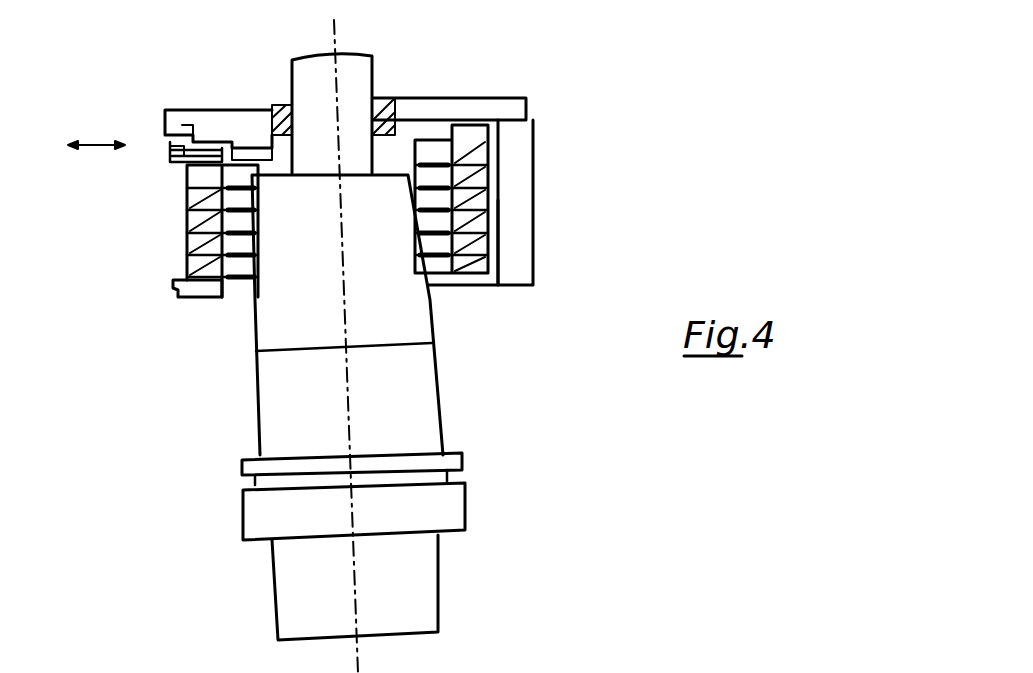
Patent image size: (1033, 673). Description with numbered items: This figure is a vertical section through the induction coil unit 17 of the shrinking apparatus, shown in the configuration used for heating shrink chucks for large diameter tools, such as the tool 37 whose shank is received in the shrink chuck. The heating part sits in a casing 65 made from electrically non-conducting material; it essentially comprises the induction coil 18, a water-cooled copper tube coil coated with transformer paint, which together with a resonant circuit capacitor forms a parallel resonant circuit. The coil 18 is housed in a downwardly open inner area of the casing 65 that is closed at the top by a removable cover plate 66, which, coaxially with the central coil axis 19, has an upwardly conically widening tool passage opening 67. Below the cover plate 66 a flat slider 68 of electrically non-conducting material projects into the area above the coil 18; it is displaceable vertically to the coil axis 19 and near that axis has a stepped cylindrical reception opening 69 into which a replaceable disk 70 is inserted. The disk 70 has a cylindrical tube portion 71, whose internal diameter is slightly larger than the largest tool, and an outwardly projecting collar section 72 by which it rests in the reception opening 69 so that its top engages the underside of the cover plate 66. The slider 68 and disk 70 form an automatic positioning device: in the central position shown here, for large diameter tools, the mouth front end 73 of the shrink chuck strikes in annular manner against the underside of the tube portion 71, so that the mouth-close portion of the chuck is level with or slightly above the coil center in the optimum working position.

The induction coil unit 17 is at (626, 168).
The induction coil 18 is at (503, 131).
The central coil axis 19 is at (358, 655).
The tool 37 is at (378, 83).
The casing 65 is at (526, 222).
The cover plate 66 is at (490, 97).
The tool passage opening 67 is at (290, 110).
The flat slider 68 is at (168, 144).
The stepped cylindrical reception opening 69 is at (172, 153).
The replaceable disk 70 is at (250, 138).
The cylindrical tube portion 71 is at (500, 172).
The collar section 72 is at (420, 126).
The mouth front end 73 is at (283, 180).